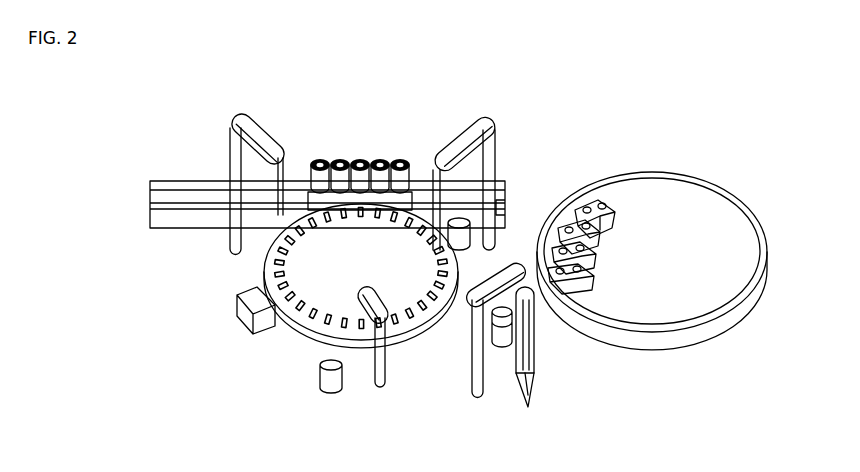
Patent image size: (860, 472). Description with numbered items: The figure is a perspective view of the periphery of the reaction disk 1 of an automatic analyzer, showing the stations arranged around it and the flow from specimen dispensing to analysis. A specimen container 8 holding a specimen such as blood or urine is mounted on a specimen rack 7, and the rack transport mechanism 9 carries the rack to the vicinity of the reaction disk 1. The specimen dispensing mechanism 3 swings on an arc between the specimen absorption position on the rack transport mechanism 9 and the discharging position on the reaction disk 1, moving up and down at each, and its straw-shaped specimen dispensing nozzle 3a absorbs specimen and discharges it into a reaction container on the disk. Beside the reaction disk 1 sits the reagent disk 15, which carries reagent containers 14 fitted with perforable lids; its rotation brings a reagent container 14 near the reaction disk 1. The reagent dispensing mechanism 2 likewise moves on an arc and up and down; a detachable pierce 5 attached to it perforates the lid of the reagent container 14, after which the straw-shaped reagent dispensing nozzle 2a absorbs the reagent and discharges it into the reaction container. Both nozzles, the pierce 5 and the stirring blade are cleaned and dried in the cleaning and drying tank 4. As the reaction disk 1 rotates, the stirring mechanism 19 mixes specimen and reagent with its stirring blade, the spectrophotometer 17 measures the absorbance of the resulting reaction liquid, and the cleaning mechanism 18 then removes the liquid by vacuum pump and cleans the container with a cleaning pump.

The reaction disk 1 is at (304, 345).
The reagent dispensing mechanism 2 is at (470, 392).
The reagent dispensing nozzle 2a is at (535, 345).
The specimen dispensing mechanism 3 is at (466, 144).
The specimen dispensing nozzle 3a is at (433, 195).
The cleaning and drying tank 4 is at (462, 248).
The pierce 5 is at (536, 394).
The specimen rack 7 is at (308, 196).
The specimen container 8 is at (336, 165).
The rack transport mechanism 9 is at (204, 183).
The reagent container 14 is at (598, 205).
The reagent disk 15 is at (745, 312).
The spectrophotometer 17 is at (240, 318).
The cleaning mechanism 18 is at (240, 120).
The stirring mechanism 19 is at (378, 390).